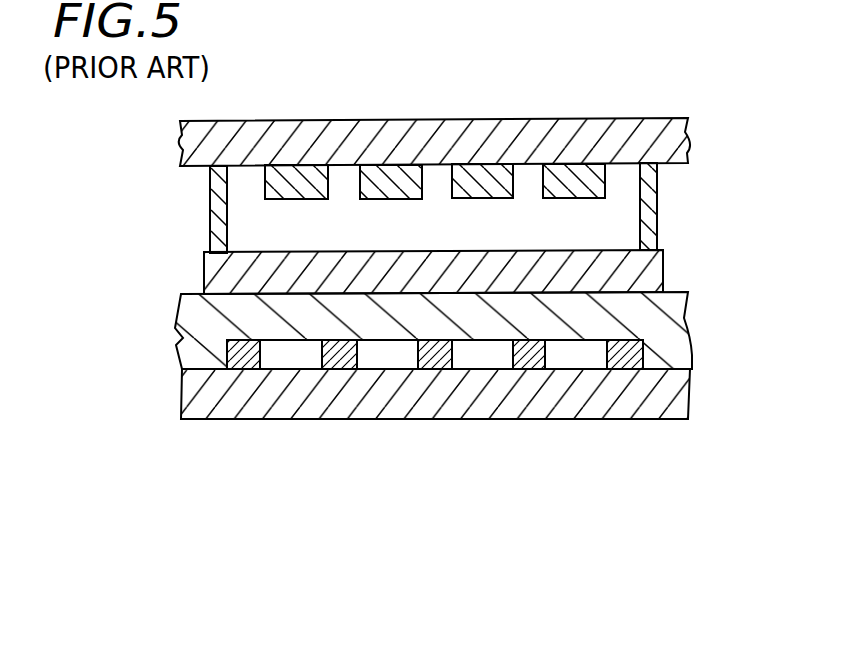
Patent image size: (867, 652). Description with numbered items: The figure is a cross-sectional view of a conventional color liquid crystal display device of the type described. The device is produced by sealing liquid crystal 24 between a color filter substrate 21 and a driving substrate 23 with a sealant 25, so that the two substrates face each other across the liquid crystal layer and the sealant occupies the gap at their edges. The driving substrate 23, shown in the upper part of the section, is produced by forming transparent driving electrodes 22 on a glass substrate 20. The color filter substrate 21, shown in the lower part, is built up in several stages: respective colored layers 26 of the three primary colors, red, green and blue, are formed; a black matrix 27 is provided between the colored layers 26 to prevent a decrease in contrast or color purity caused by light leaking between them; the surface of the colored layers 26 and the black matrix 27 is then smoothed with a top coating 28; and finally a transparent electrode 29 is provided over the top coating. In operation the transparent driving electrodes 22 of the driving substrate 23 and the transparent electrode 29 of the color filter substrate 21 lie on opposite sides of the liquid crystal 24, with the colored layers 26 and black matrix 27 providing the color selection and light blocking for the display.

The glass substrate 20 is at (197, 145).
The color filter substrate 21 is at (720, 248).
The transparent driving electrodes 22 is at (500, 178).
The driving substrate 23 is at (720, 113).
The liquid crystal 24 is at (250, 232).
The sealant 25 is at (218, 215).
The colored layers 26 is at (468, 369).
The black matrix 27 is at (345, 371).
The top coating 28 is at (188, 343).
The transparent electrode 29 is at (215, 273).